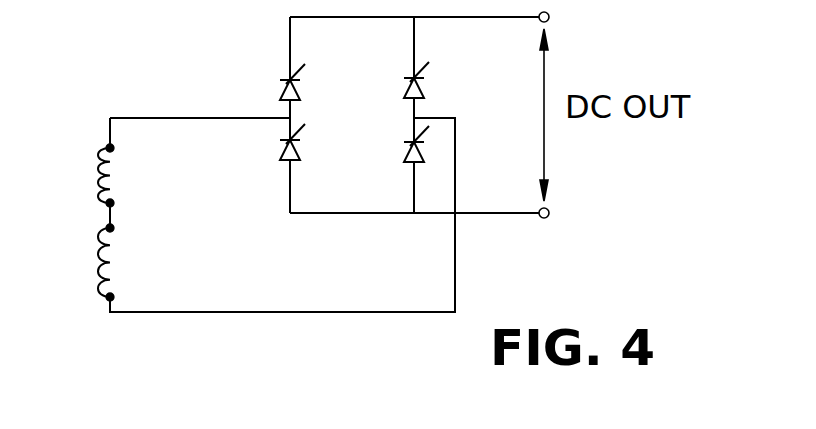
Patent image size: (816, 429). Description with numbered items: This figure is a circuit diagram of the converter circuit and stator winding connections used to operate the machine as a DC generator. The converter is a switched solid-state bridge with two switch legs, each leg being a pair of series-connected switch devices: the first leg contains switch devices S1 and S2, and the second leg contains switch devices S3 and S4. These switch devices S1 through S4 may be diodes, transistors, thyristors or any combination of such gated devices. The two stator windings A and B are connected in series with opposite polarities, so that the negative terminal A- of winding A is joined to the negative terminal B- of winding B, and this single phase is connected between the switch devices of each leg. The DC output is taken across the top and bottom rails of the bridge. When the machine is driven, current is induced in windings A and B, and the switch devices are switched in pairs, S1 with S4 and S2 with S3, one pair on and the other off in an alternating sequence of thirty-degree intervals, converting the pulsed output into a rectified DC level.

The switch device S1 is at (318, 86).
The switch device S2 is at (318, 141).
The switch device S3 is at (442, 85).
The switch device S4 is at (424, 157).
The stator winding A is at (81, 175).
The stator winding B is at (81, 262).
The winding A negative terminal A- is at (130, 195).
The winding B negative terminal B- is at (130, 241).